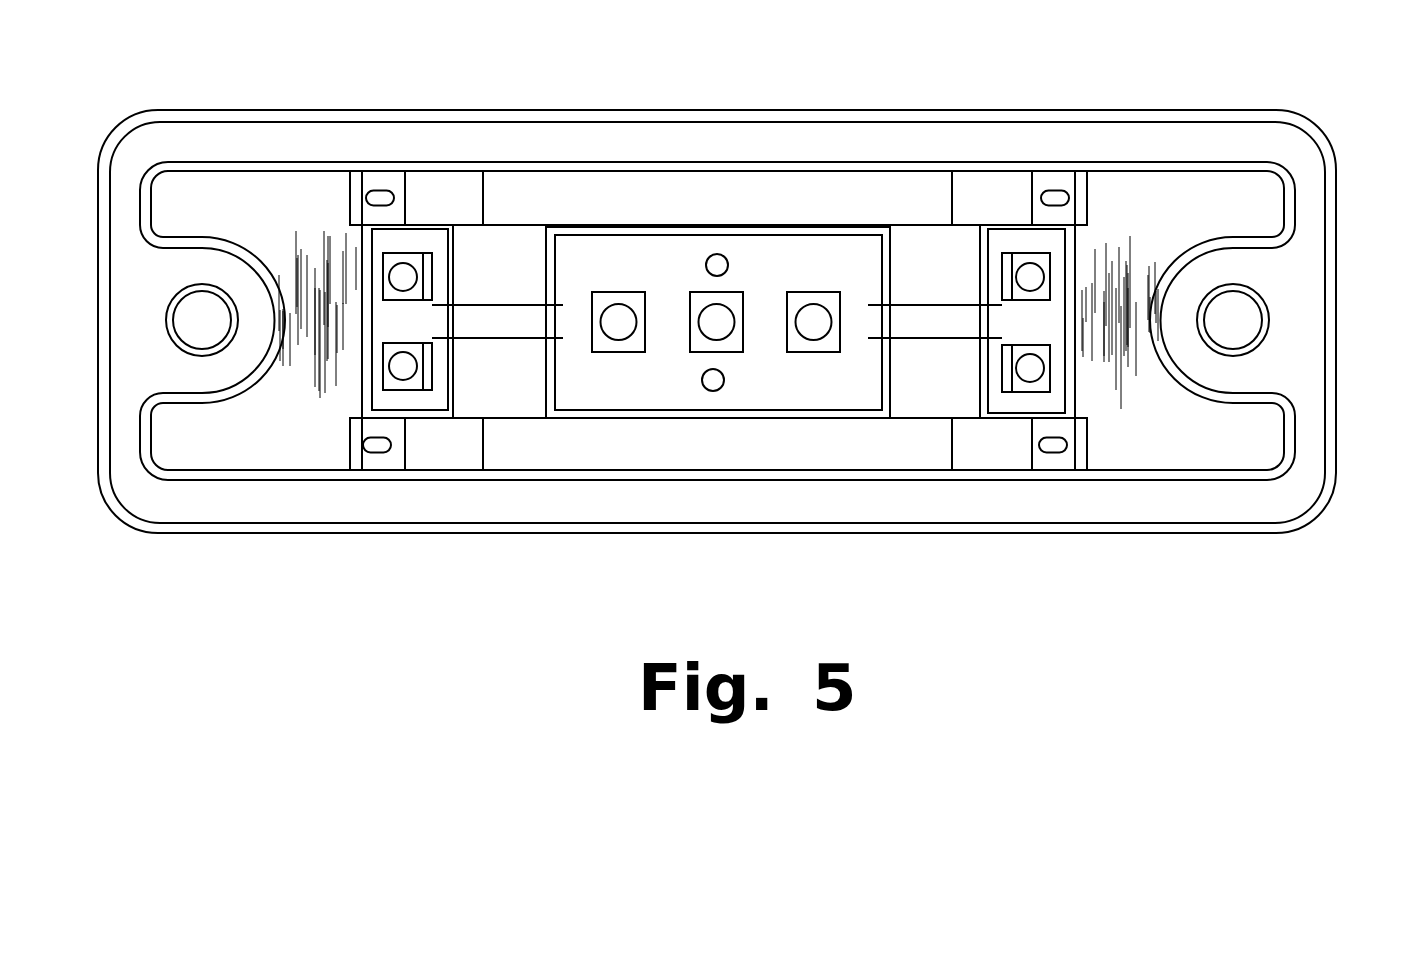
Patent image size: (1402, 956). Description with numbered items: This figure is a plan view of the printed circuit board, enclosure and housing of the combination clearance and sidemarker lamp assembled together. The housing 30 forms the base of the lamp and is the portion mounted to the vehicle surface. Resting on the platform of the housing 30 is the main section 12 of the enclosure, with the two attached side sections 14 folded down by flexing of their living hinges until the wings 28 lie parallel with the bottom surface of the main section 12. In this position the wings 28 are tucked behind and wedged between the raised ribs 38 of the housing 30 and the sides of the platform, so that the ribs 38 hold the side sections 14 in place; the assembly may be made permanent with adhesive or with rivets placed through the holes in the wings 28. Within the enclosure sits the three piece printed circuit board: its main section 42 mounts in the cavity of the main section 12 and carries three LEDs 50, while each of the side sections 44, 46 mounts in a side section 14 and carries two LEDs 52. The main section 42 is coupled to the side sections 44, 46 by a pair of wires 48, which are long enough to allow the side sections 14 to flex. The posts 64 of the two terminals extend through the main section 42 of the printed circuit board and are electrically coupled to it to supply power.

The main section 12 is at (787, 415).
The side sections 14 is at (425, 228).
The wings 28 is at (383, 177).
The housing 30 is at (1323, 505).
The raised ribs 38 is at (350, 195).
The main section 42 is at (607, 393).
The side section 44 is at (1020, 403).
The side section 46 is at (415, 400).
The wires 48 is at (490, 303).
The LEDs 50 is at (640, 290).
The LEDs 52 is at (383, 272).
The post 64 is at (716, 255).